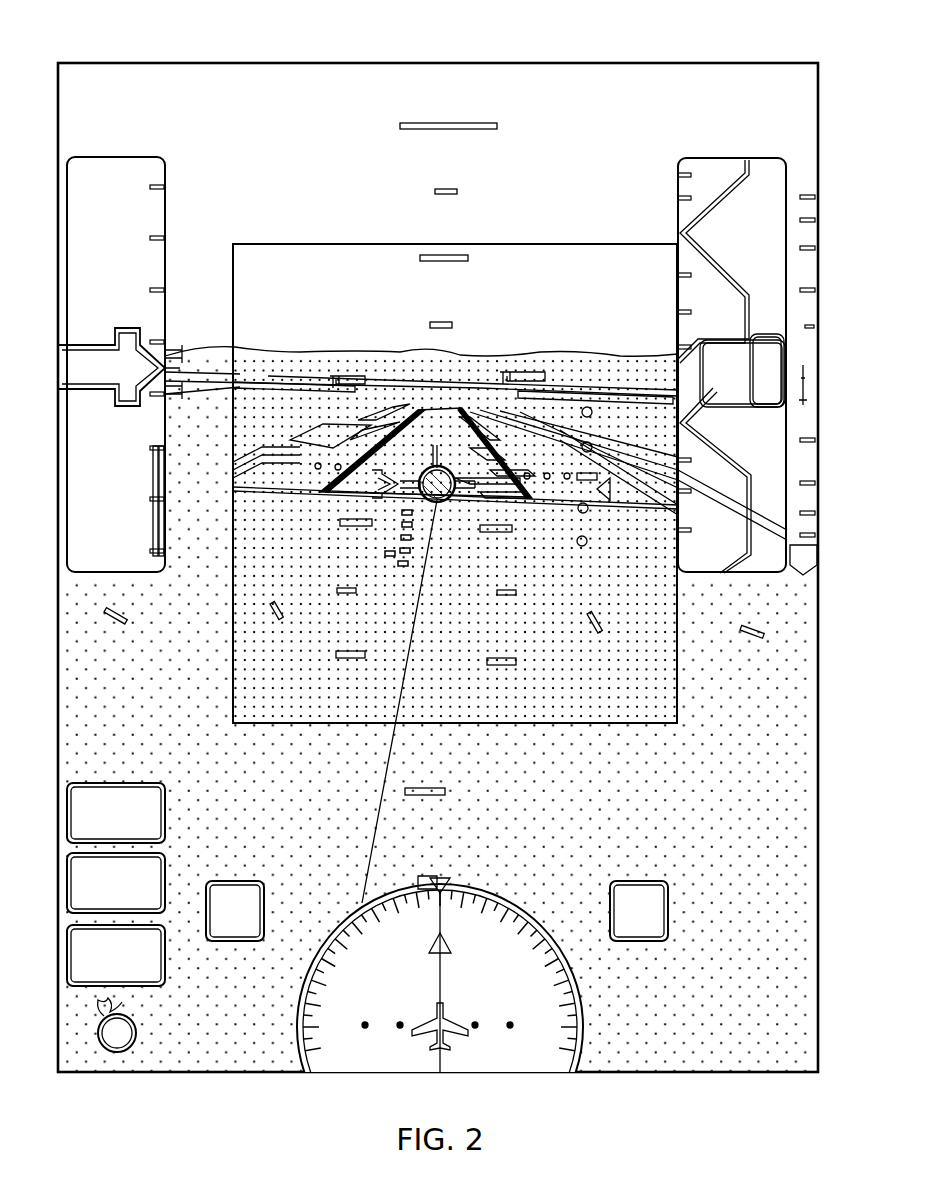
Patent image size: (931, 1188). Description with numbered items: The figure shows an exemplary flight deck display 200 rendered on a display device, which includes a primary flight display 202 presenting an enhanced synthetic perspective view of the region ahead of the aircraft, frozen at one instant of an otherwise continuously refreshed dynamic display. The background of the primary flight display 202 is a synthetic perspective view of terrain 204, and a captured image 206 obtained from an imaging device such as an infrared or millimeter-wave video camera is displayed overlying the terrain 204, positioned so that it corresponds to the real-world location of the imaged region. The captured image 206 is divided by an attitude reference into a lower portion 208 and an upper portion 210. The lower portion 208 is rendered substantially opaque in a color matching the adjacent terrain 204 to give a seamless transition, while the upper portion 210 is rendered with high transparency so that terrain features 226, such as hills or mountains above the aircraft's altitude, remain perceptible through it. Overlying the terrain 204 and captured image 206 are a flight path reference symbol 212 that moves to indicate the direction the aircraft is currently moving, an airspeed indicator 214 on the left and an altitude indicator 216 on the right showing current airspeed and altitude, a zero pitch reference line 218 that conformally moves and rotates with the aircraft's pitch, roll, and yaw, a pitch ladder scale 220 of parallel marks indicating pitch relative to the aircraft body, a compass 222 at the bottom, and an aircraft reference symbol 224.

The flight deck display 200 is at (818, 313).
The primary flight display 202 is at (192, 110).
The synthetic perspective view of terrain 204 is at (722, 851).
The captured image 206 is at (612, 725).
The lower portion of the captured image 208 is at (270, 524).
The upper portion of the captured image 210 is at (516, 268).
The flight path reference symbol 212 is at (437, 500).
The airspeed indicator 214 is at (64, 452).
The altitude indicator 216 is at (792, 455).
The zero pitch reference line 218 is at (292, 387).
The pitch ladder scale 220 is at (440, 106).
The compass 222 is at (512, 894).
The aircraft reference symbol 224 is at (348, 372).
The terrain features 226 is at (456, 346).